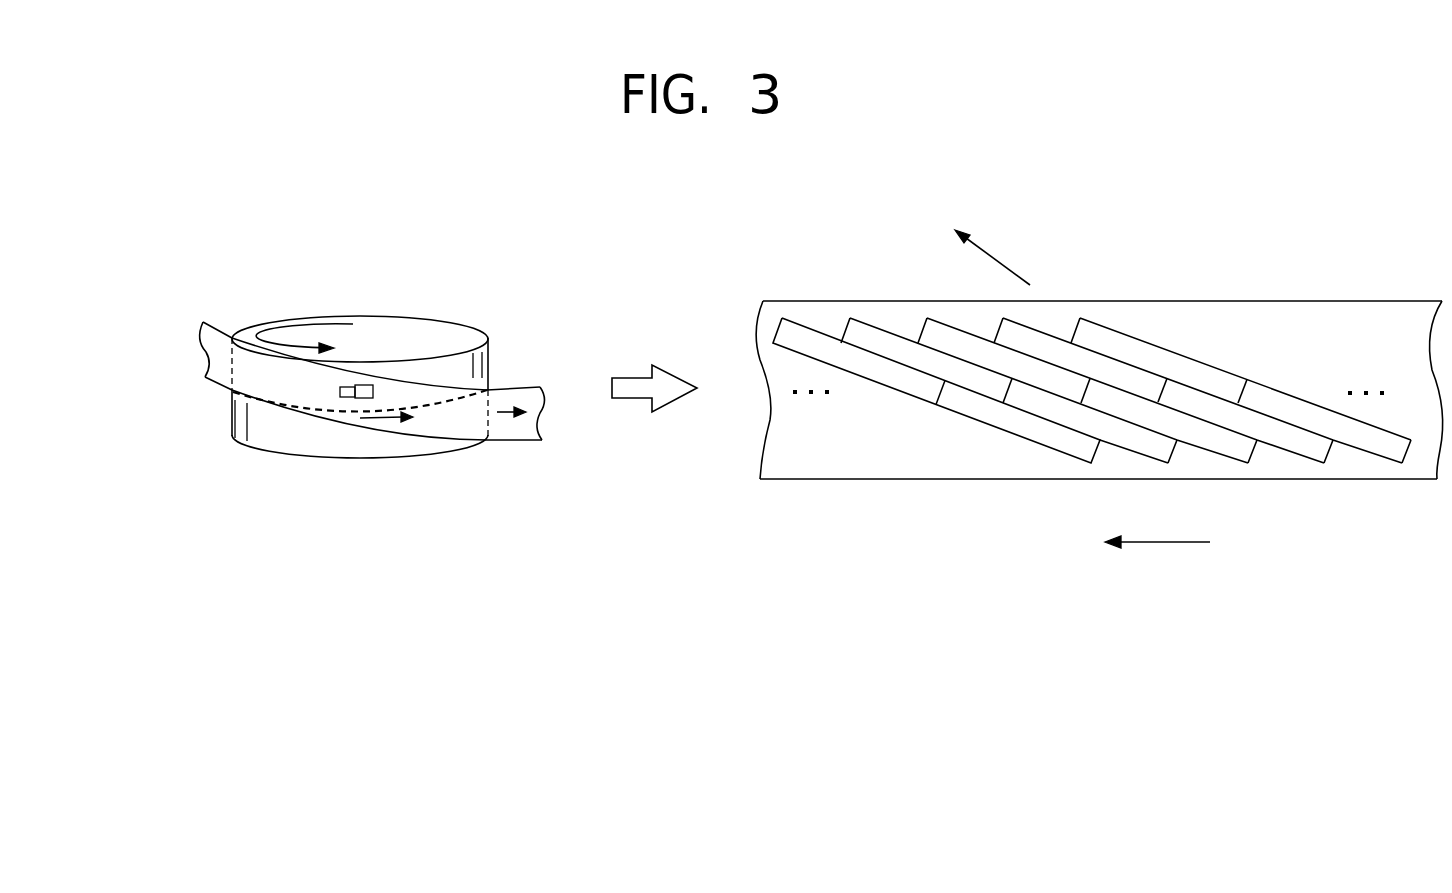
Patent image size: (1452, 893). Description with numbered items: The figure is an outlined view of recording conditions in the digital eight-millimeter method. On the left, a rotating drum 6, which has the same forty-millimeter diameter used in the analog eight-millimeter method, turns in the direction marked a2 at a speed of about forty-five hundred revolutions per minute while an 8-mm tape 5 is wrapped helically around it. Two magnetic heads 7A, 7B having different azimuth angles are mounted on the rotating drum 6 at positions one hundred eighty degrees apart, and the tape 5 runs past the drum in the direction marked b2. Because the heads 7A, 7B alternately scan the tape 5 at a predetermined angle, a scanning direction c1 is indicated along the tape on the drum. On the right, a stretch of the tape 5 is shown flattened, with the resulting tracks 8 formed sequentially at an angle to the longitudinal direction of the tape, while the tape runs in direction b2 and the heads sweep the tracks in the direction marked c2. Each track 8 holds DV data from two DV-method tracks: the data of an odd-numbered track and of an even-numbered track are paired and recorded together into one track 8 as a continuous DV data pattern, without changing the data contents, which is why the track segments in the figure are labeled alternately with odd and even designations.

The 8-mm tape 5 is at (222, 363).
The rotating drum 6 is at (413, 333).
The magnetic head 7A is at (349, 397).
The magnetic head 7B is at (347, 468).
The track 8 is at (860, 342).
The drum rotating direction a2 is at (317, 325).
The tape running direction b2 is at (502, 427).
The head scanning direction c1 is at (390, 432).
The track scanning direction c2 is at (993, 257).